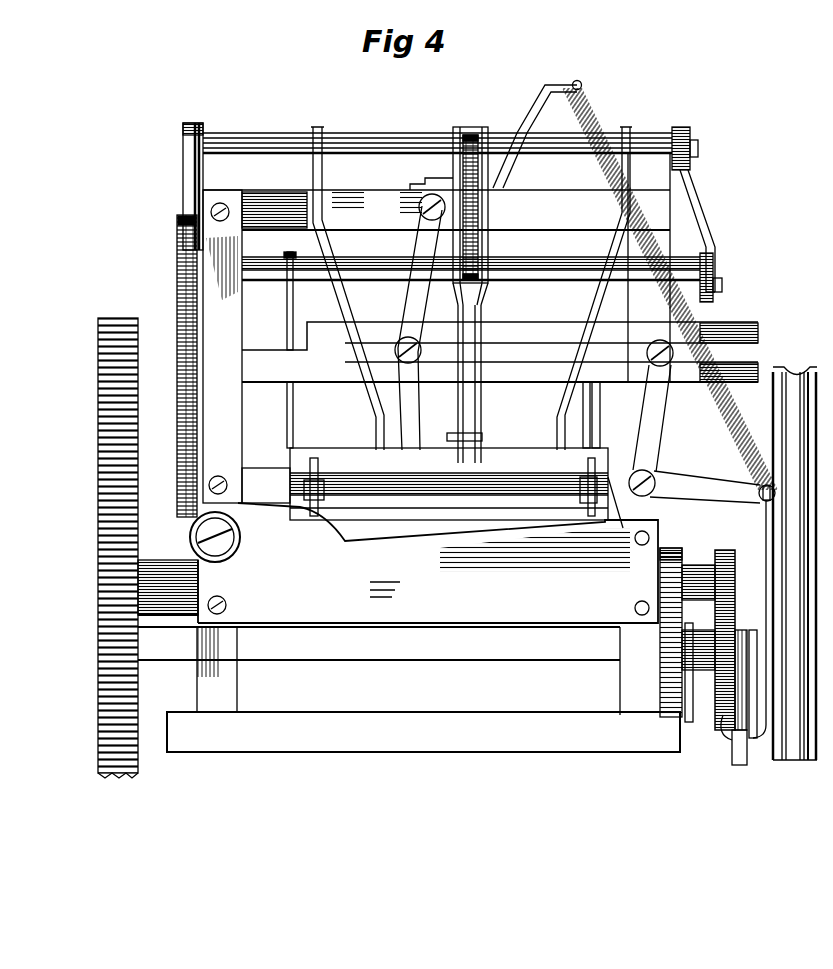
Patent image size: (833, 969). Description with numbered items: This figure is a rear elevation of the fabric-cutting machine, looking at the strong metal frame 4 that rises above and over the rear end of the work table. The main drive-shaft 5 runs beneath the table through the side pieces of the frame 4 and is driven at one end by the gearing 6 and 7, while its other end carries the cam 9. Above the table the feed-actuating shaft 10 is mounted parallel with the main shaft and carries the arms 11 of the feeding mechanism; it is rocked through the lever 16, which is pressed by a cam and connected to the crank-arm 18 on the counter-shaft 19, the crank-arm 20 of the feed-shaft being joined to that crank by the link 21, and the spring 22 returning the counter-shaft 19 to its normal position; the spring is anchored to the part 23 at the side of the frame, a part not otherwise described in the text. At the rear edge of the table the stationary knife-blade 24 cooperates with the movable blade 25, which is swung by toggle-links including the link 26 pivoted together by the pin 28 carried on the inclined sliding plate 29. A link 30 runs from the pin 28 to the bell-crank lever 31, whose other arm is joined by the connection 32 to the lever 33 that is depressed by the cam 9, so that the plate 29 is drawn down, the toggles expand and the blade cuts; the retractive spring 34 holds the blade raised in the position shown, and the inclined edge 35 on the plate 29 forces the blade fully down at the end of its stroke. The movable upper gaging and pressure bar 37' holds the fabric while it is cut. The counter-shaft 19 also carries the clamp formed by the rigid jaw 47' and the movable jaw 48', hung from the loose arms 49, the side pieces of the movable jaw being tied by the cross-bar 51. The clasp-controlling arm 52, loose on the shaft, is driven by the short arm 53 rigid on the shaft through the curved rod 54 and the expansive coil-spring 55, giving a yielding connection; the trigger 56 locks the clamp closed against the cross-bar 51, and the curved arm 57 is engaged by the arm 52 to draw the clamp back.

The frame 4 is at (436, 328).
The main drive-shaft 5 is at (697, 563).
The gearing 6 is at (672, 553).
The gearing 7 is at (99, 548).
The cam 9 is at (735, 595).
The feed-actuating shaft 10 is at (551, 268).
The arms 11 is at (596, 423).
The lever 16 is at (692, 725).
The crank-arm 18 is at (680, 126).
The counter-shaft 19 is at (397, 130).
The crank-arm 20 is at (707, 253).
The link 21 is at (708, 219).
The spring 22 is at (178, 287).
The post 23 is at (187, 173).
The stationary knife-blade 24 is at (428, 502).
The movable blade 25 is at (256, 537).
The toggle-link 26 is at (420, 328).
The pin 28 is at (396, 350).
The inclined sliding plate 29 is at (500, 352).
The link 30 is at (551, 352).
The bell-crank lever 31 is at (702, 421).
The connection 32 is at (762, 516).
The lever 33 is at (743, 767).
The retractive spring 34 is at (731, 443).
The inclined edge 35 is at (282, 350).
The upper gaging and pressure bar 37' is at (266, 485).
The rigid jaw 47' is at (449, 506).
The movable jaw 48' is at (456, 488).
The loose arms 49 is at (629, 178).
The cross-bar 51 is at (344, 466).
The arm 52 is at (459, 246).
The short arm 53 is at (487, 120).
The curved rod 54 is at (468, 132).
The expansive coil-spring 55 is at (480, 213).
The trip or trigger 56 is at (467, 408).
The curved arm 57 is at (448, 436).